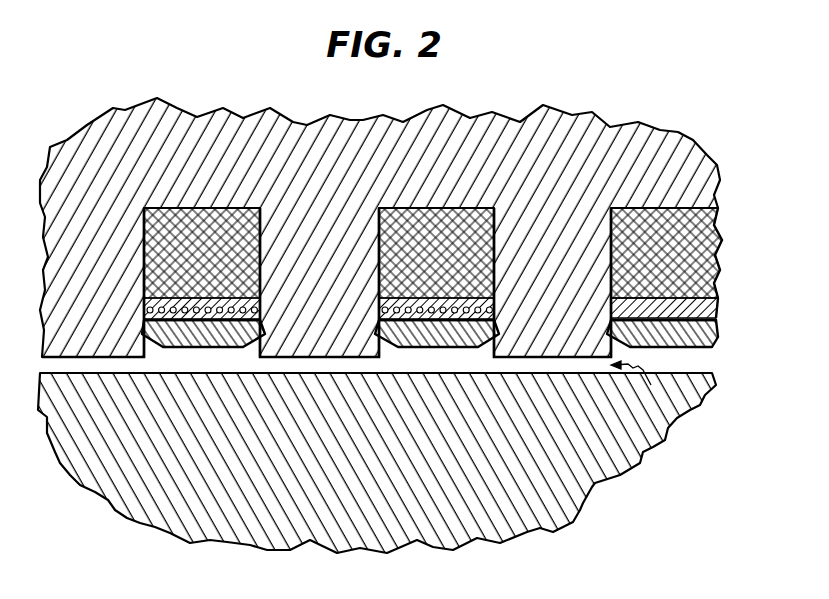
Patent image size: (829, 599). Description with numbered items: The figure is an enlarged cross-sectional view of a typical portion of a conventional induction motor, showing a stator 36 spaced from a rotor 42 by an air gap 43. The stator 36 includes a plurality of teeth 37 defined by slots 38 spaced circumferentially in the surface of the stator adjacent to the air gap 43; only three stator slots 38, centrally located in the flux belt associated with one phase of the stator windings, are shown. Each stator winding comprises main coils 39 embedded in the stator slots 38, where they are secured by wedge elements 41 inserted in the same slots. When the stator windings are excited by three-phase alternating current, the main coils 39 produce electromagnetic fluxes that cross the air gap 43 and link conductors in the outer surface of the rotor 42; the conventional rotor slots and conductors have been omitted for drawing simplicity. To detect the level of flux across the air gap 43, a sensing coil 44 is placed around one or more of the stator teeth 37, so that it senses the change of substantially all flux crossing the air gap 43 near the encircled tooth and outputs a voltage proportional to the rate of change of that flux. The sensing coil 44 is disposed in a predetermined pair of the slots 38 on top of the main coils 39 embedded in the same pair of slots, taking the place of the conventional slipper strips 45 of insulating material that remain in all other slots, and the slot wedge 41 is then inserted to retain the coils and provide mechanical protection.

The stator 36 is at (217, 168).
The teeth 37 is at (299, 258).
The slots 38 is at (330, 388).
The main coils 39 is at (433, 253).
The wedge elements 41 is at (430, 367).
The rotor 42 is at (323, 460).
The air gap 43 is at (641, 386).
The sensing coil 44 is at (319, 309).
The slipper strips 45 is at (635, 315).